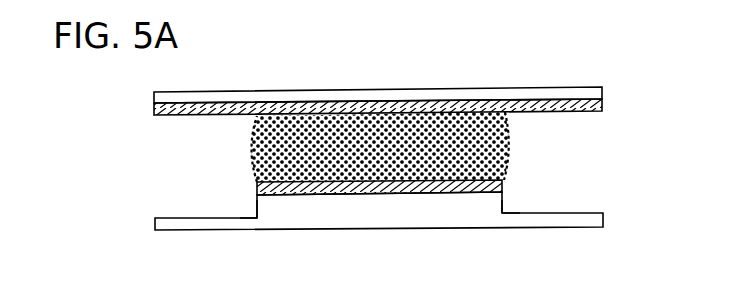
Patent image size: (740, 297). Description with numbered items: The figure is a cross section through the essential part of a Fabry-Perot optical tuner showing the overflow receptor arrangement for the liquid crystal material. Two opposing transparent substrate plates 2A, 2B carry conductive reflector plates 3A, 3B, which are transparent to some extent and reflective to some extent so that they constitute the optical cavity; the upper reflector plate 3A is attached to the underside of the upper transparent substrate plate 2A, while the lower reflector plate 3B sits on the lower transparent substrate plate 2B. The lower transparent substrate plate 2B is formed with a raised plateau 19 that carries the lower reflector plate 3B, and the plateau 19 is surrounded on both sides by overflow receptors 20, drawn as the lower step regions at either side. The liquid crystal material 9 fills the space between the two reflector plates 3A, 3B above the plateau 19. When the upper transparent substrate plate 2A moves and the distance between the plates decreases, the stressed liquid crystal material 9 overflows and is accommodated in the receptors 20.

The transparent substrate plate 2A is at (487, 87).
The conductive reflector plate 3A is at (603, 103).
The liquid crystal material 9 is at (508, 148).
The conductive reflector plate 3B is at (438, 194).
The plateau 19 is at (358, 217).
The transparent substrate plate 2B is at (604, 218).
The overflow receptor 20 is at (244, 212).